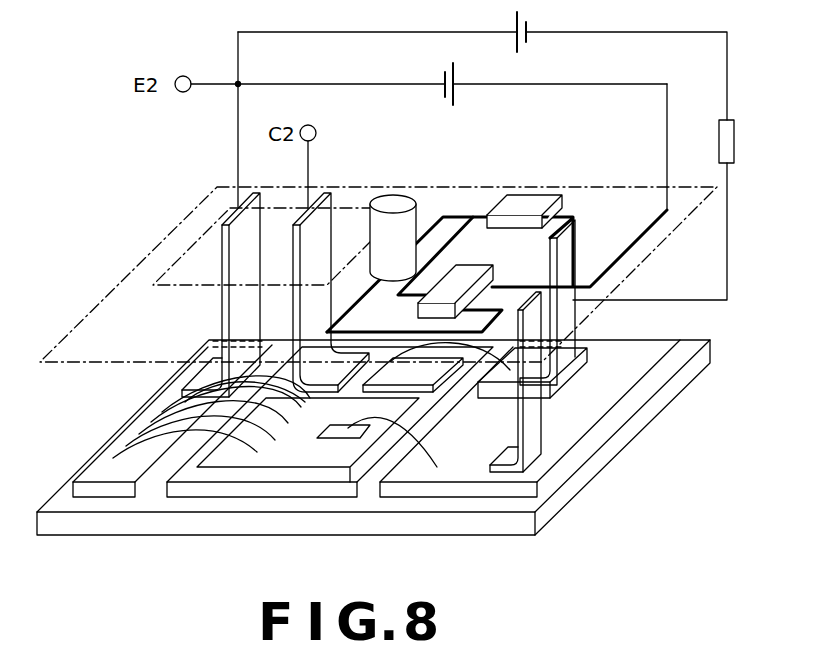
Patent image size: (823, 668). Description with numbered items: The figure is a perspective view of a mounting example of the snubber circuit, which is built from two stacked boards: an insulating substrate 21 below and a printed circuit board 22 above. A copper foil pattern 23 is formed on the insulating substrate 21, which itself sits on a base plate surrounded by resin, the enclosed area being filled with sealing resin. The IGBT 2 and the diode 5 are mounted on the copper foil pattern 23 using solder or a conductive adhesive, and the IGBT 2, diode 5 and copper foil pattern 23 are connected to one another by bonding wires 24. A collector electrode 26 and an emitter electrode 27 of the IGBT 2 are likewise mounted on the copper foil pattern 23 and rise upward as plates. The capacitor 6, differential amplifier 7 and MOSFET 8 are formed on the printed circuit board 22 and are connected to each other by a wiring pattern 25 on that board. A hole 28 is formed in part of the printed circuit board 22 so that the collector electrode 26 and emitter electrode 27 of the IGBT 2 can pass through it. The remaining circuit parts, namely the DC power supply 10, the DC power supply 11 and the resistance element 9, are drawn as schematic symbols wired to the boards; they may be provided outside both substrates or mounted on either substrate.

The IGBT 2 is at (290, 453).
The diode 5 is at (427, 380).
The capacitor 6 is at (393, 192).
The differential amplifier 7 is at (521, 200).
The MOSFET 8 is at (475, 270).
The resistance element 9 is at (735, 137).
The DC power supply 10 is at (527, 50).
The DC power supply 11 is at (444, 103).
The insulating substrate 21 is at (108, 522).
The printed circuit board 22 is at (87, 337).
The copper foil pattern 23 is at (567, 467).
The bonding wires 24 is at (137, 448).
The wiring pattern 25 is at (625, 252).
The collector electrode 26 is at (340, 198).
The emitter electrode 27 is at (220, 248).
The hole 28 is at (183, 270).